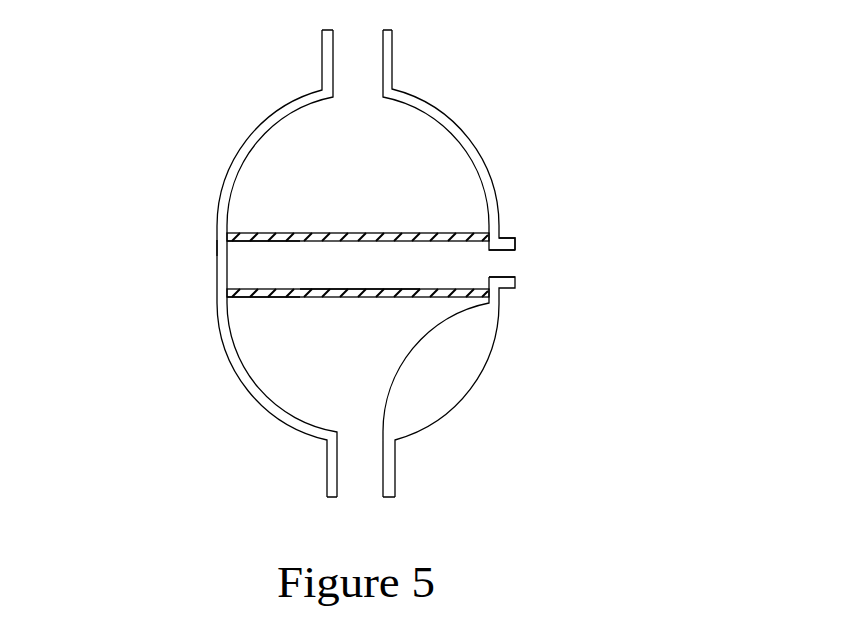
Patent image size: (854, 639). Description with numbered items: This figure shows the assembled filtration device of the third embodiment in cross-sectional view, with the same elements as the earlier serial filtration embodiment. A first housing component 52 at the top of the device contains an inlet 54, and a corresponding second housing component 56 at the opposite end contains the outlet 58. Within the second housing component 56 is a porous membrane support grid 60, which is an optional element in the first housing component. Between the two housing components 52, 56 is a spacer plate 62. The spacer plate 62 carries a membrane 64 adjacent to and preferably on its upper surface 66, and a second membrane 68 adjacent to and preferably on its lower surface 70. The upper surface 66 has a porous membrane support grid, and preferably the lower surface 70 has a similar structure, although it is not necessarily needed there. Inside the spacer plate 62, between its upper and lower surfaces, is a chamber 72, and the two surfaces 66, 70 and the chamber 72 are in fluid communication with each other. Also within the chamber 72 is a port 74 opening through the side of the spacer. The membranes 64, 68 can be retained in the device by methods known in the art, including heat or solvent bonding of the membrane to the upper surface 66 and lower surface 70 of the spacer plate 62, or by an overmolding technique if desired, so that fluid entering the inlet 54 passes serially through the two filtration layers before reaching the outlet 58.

The first housing component 52 is at (467, 140).
The inlet 54 is at (360, 65).
The second housing component 56 is at (225, 353).
The outlet 58 is at (358, 468).
The porous membrane support grid 60 is at (258, 302).
The spacer plate 62 is at (215, 248).
The membrane 64 is at (397, 232).
The upper surface 66 is at (258, 245).
The second membrane 68 is at (410, 297).
The lower surface 70 is at (433, 289).
The chamber 72 is at (367, 263).
The port 74 is at (515, 240).